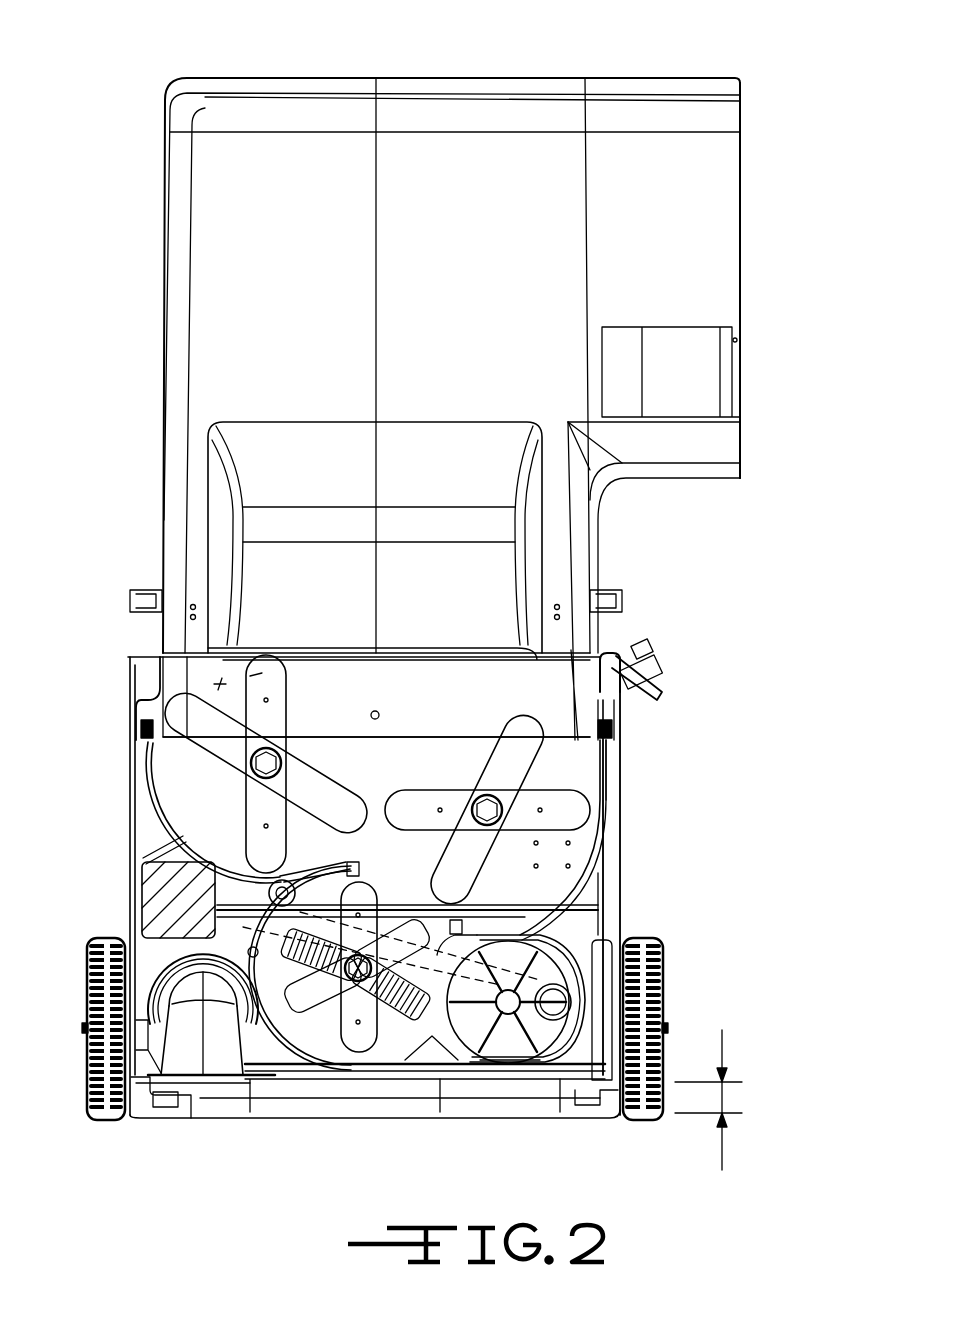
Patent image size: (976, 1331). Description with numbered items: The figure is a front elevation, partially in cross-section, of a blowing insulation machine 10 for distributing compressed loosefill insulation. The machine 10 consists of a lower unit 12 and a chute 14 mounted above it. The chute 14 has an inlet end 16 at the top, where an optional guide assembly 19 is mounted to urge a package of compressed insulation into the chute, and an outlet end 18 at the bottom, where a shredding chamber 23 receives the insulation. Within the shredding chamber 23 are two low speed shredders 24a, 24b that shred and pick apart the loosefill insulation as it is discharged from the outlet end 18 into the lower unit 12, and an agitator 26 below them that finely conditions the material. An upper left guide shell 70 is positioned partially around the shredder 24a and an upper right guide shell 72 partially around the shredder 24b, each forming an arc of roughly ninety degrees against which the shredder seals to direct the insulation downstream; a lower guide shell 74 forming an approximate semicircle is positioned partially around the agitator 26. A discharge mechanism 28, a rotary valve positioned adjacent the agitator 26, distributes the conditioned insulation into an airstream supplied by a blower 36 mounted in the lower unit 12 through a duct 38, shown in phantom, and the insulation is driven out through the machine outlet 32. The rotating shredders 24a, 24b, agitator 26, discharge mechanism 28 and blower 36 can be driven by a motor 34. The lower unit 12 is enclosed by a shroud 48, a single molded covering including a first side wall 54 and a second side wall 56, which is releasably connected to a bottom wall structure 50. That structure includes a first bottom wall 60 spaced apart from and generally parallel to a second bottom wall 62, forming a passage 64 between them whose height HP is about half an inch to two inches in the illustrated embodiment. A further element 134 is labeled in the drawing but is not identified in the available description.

The blowing insulation machine 10 is at (118, 60).
The lower unit 12 is at (128, 703).
The chute 14 is at (160, 282).
The inlet end 16 is at (740, 197).
The outlet end 18 is at (430, 648).
The guide assembly 19 is at (740, 365).
The shredding chamber 23 is at (400, 762).
The low speed shredder 24a is at (185, 745).
The low speed shredder 24b is at (560, 790).
The agitator 26 is at (333, 1022).
The discharge mechanism 28 is at (445, 1037).
The machine outlet 32 is at (560, 1018).
The motor 34 is at (170, 965).
The blower 36 is at (150, 880).
The duct 38 is at (517, 935).
The shroud 48 is at (623, 895).
The bottom wall structure 50 is at (362, 1113).
The first side wall 54 is at (165, 960).
The second side wall 56 is at (623, 822).
The first bottom wall 60 is at (500, 1108).
The second bottom wall 62 is at (415, 1077).
The passage 64 is at (382, 1092).
The upper left guide shell 70 is at (158, 797).
The upper right guide shell 72 is at (600, 848).
The lower guide shell 74 is at (288, 1042).
The clip 134 is at (255, 655).
The height of passage HP is at (722, 1097).